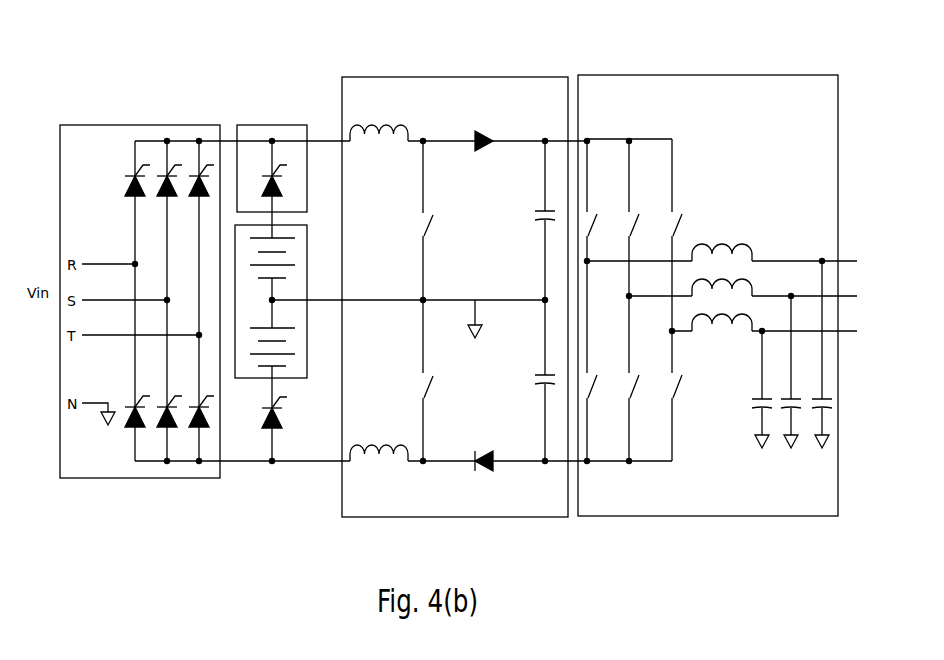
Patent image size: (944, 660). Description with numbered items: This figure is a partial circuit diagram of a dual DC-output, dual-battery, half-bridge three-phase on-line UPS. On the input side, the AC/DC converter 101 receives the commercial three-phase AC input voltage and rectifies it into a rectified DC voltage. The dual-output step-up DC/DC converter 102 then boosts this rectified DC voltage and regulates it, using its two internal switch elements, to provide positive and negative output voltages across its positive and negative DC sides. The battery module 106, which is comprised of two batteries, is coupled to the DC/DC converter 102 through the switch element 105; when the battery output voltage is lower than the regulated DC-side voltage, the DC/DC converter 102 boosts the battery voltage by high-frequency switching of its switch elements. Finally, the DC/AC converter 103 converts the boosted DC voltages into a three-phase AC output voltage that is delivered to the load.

The AC/DC converter 101 is at (172, 124).
The dual-output step-up DC/DC converter 102 is at (478, 76).
The DC/AC converter 103 is at (753, 73).
The switch element 105 is at (281, 123).
The battery module 106 is at (307, 223).